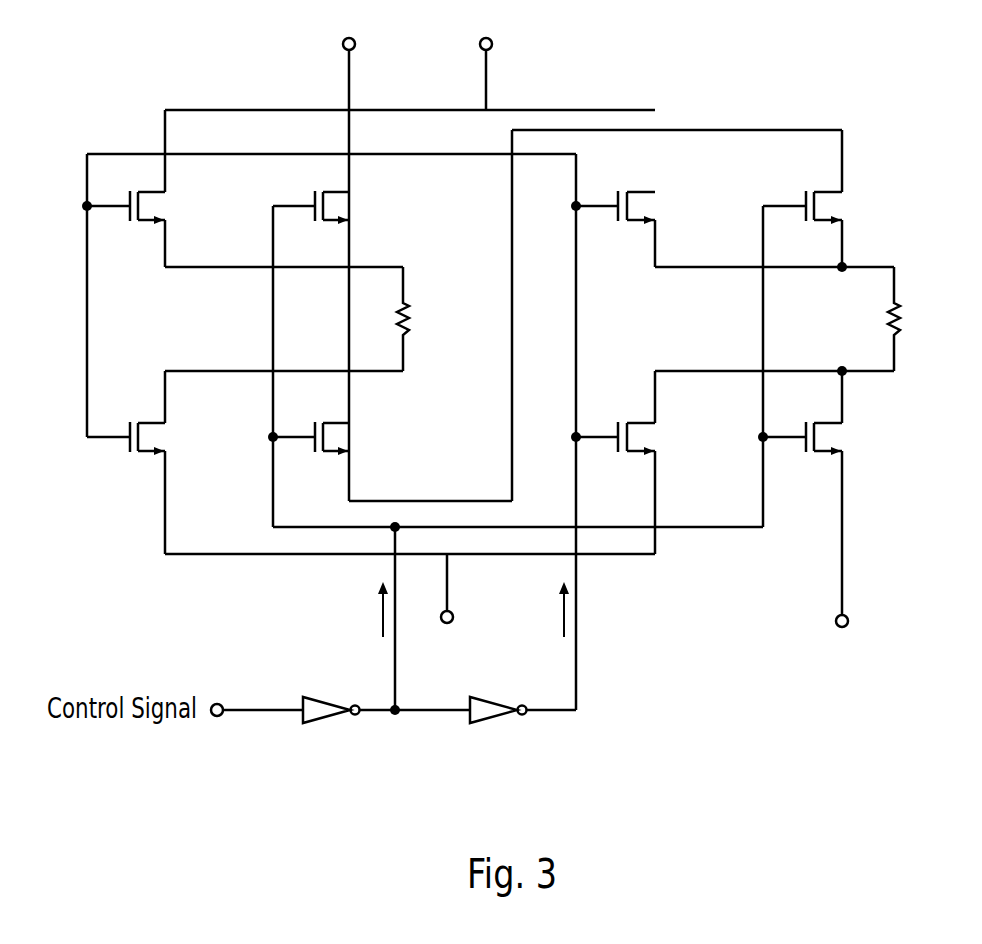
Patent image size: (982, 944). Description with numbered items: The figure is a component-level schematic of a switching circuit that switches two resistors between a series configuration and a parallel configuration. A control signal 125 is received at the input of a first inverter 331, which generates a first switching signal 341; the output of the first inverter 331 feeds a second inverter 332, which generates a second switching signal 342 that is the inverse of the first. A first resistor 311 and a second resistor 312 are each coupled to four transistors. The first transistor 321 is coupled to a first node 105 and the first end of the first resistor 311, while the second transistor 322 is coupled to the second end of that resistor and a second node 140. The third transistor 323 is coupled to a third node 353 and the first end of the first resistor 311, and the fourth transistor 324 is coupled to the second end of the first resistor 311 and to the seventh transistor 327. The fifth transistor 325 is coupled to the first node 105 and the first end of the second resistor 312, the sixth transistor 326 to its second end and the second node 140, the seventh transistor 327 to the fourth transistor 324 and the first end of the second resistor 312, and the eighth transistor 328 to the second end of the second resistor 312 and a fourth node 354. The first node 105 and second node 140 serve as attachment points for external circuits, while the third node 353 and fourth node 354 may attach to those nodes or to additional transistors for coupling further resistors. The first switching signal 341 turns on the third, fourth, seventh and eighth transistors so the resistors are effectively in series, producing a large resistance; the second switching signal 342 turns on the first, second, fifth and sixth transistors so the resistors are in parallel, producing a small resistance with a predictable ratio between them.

The first node 105 is at (495, 46).
The control signal 125 is at (122, 727).
The second node 140 is at (453, 625).
The first resistor 311 is at (412, 318).
The second resistor 312 is at (905, 316).
The first transistor 321 is at (150, 208).
The second transistor 322 is at (150, 438).
The third transistor 323 is at (335, 208).
The fourth transistor 324 is at (345, 438).
The fifth transistor 325 is at (645, 208).
The sixth transistor 326 is at (645, 438).
The seventh transistor 327 is at (838, 208).
The eighth transistor 328 is at (838, 438).
The first inverter 331 is at (330, 724).
The second inverter 332 is at (490, 724).
The first switching signal 341 is at (378, 602).
The second switching signal 342 is at (559, 623).
The third node 353 is at (357, 47).
The fourth node 354 is at (858, 621).